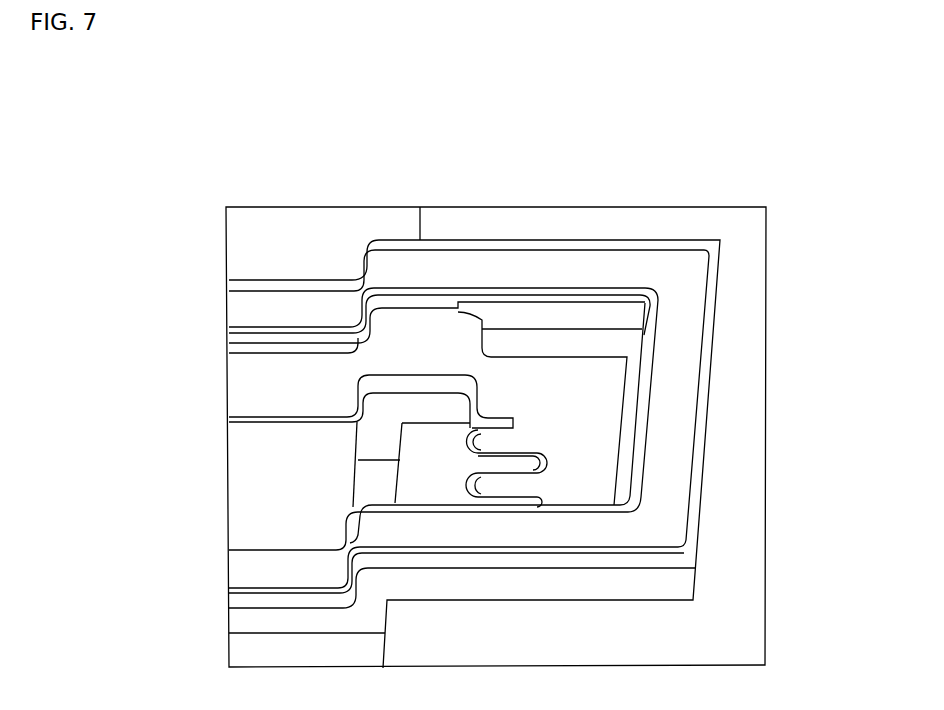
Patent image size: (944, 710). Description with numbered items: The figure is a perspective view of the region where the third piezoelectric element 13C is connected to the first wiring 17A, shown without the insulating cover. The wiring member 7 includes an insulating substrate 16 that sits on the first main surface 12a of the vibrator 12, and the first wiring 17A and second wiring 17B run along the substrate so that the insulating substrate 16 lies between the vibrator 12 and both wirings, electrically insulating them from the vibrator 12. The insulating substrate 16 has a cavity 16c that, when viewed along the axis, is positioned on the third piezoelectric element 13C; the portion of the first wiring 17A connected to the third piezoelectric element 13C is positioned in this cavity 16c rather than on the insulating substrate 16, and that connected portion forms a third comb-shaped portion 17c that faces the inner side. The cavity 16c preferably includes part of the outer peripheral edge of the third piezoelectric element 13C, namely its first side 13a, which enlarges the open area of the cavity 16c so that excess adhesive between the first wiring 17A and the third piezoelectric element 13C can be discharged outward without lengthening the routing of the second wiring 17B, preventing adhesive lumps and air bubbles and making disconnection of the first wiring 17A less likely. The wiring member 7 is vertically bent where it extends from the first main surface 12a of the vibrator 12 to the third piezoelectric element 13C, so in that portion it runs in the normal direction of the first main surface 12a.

The wiring member 7 is at (597, 239).
The vibrator 12 is at (370, 208).
The first main surface 12a is at (323, 253).
The third piezoelectric element 13C is at (770, 363).
The first side 13a is at (395, 448).
The insulating substrate 16 is at (548, 247).
The cavity 16c is at (504, 337).
The first wiring 17A is at (245, 382).
The second wiring 17B is at (245, 303).
The third comb-shaped portion 17c is at (478, 480).